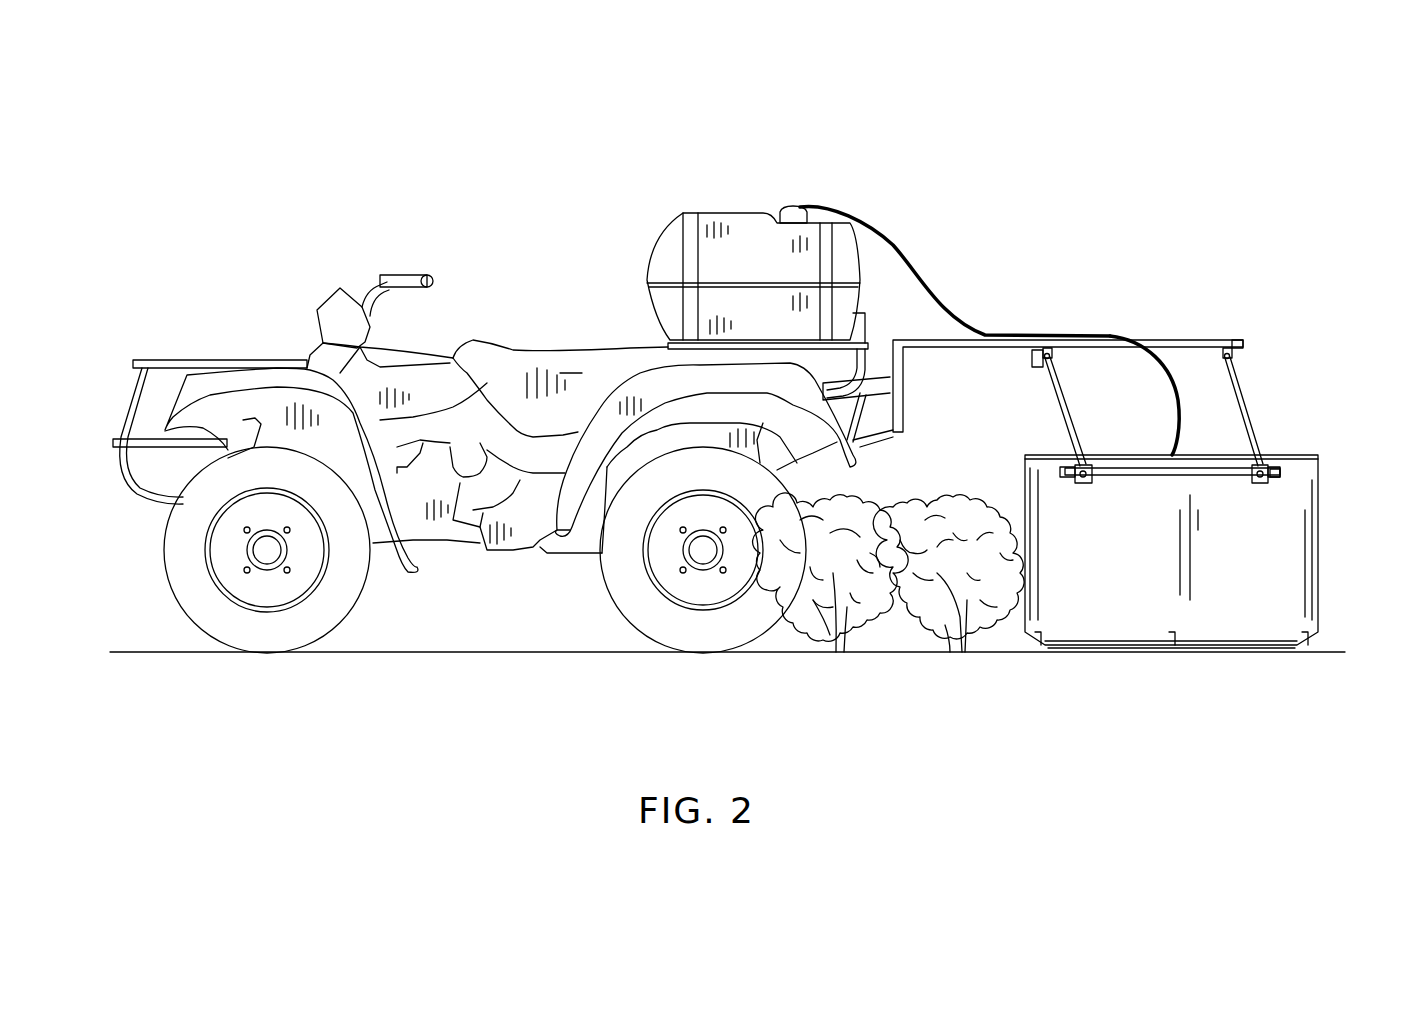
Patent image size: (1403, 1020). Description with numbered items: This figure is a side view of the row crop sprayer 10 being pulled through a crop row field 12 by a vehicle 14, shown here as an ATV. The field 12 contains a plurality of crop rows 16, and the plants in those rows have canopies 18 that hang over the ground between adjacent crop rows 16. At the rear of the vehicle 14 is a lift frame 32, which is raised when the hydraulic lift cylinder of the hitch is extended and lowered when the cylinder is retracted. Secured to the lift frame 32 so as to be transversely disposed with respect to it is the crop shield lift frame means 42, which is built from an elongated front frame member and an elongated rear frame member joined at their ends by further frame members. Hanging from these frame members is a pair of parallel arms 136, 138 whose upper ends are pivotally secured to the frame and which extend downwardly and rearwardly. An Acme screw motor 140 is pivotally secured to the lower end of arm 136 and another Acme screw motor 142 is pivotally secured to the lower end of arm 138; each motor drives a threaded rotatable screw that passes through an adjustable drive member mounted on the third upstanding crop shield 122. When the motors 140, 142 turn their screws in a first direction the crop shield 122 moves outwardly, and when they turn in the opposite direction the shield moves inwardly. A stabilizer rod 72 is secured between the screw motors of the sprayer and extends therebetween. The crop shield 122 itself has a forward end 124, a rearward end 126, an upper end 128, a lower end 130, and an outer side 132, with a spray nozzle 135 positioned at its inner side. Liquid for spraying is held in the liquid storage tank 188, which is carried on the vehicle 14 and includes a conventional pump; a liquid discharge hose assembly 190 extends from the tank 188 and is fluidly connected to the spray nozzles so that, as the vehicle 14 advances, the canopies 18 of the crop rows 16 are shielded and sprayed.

The row crop sprayer 10 is at (1192, 310).
The crop row field 12 is at (591, 653).
The vehicle 14 is at (578, 326).
The crop rows 16 is at (963, 650).
The canopies 18 is at (940, 570).
The lift frame 32 is at (931, 332).
The crop shield lift frame means 42 is at (1245, 332).
The stabilizer rod 72 is at (1148, 455).
The third upstanding crop shield 122 is at (1237, 610).
The forward end 124 is at (1055, 470).
The rearward end 126 is at (1319, 542).
The upper end 128 is at (1287, 452).
The lower end 130 is at (1283, 650).
The outer side 132 is at (1129, 568).
The spray nozzle 135 is at (1072, 650).
The arm 136 is at (1058, 410).
The arm 138 is at (1243, 383).
The Acme screw motor 140 is at (1060, 488).
The Acme screw motor 142 is at (1272, 484).
The liquid storage tank 188 is at (749, 200).
The liquid discharge hose assembly 190 is at (912, 238).